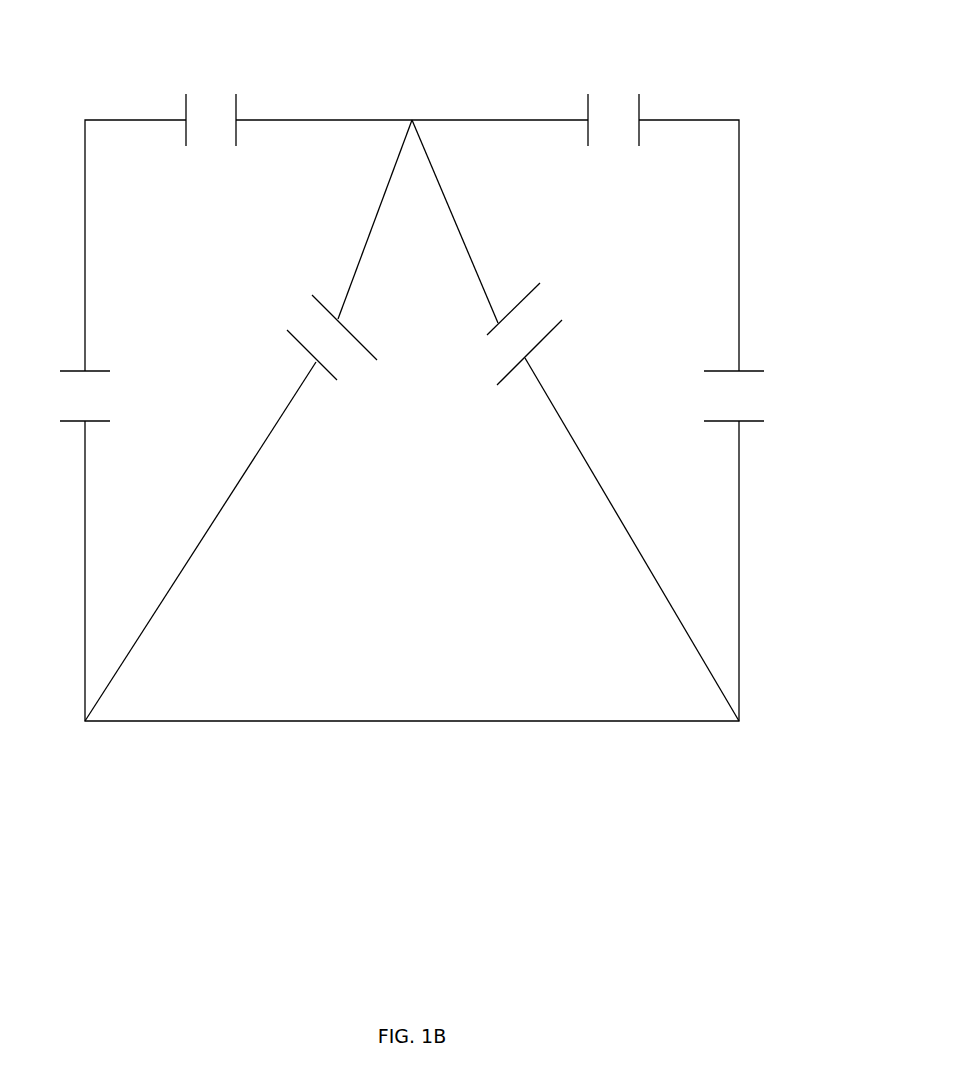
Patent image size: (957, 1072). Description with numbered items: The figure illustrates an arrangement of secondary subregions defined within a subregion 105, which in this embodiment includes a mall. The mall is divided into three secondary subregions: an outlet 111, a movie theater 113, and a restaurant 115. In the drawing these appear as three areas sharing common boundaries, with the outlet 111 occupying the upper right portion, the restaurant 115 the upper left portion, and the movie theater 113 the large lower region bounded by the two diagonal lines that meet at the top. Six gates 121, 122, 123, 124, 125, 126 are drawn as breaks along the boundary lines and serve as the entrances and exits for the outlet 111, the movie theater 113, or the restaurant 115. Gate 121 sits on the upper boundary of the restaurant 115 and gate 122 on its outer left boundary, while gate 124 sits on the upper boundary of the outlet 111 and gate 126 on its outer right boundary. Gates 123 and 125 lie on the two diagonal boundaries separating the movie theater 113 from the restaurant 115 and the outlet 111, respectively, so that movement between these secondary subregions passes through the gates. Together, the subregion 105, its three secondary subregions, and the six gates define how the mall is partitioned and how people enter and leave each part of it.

The subregion 105 is at (748, 85).
The outlet 111 is at (688, 245).
The movie theater 113 is at (412, 539).
The restaurant 115 is at (144, 245).
The gate 121 is at (211, 108).
The gate 122 is at (63, 396).
The gate 123 is at (336, 352).
The gate 124 is at (617, 107).
The gate 125 is at (545, 334).
The gate 126 is at (762, 396).